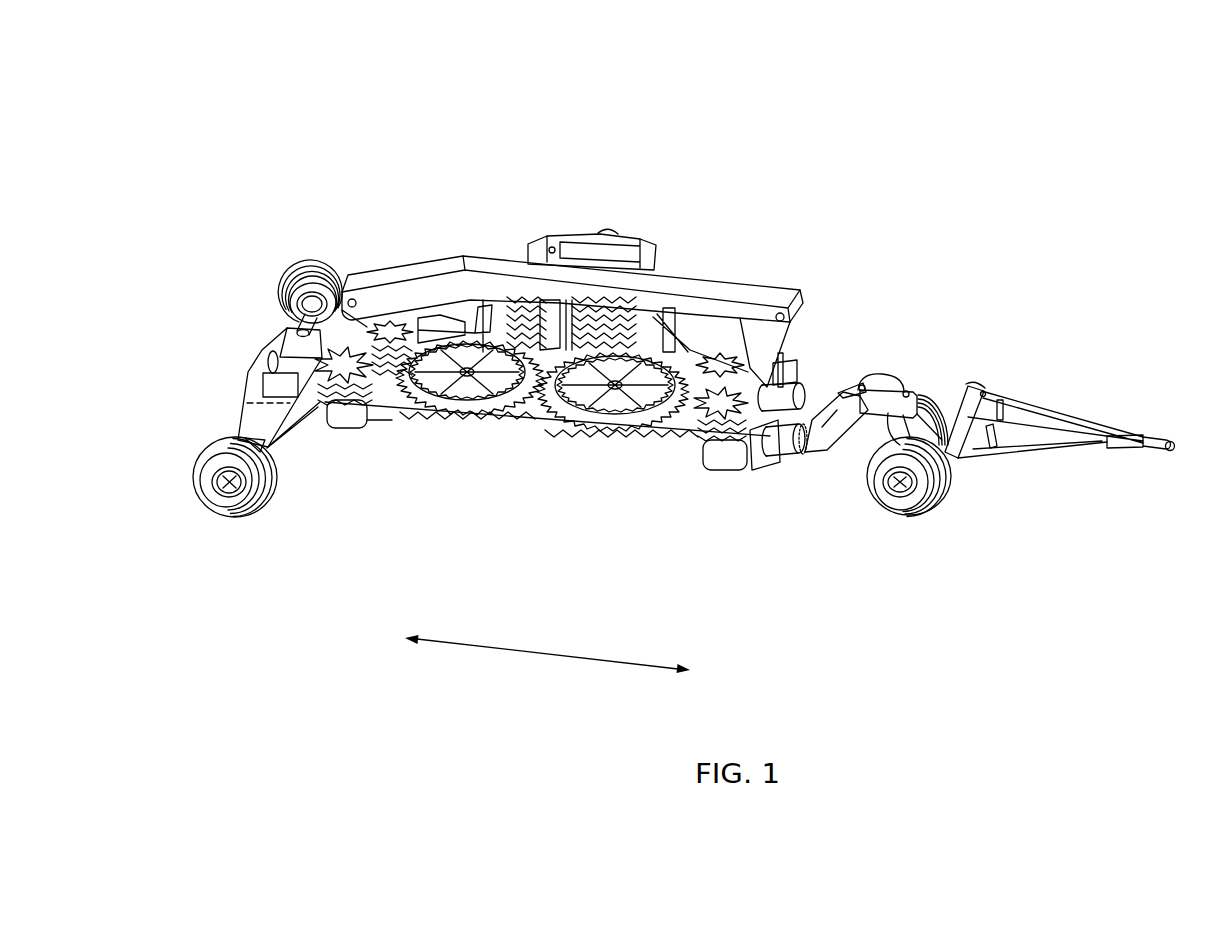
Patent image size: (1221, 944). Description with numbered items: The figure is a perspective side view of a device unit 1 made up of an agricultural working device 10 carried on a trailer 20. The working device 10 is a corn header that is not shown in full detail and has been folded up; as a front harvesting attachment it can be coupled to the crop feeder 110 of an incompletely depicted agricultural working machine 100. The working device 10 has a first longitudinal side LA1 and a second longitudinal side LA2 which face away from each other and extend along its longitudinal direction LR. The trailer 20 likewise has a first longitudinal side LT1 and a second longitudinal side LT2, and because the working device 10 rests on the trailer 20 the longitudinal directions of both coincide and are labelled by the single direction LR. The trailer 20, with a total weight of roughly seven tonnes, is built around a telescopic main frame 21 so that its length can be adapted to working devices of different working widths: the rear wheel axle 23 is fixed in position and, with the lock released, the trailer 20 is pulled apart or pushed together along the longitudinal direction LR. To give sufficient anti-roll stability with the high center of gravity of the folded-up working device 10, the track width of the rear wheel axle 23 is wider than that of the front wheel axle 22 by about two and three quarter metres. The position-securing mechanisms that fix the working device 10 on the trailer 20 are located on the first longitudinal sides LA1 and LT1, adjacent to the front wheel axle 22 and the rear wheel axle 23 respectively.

The device unit 1 is at (941, 149).
The agricultural working machine 100 is at (662, 236).
The crop feeder 110 is at (533, 245).
The agricultural working device 10 is at (548, 430).
The telescopic main frame 21 is at (668, 440).
The rear wheel axle 23 is at (316, 240).
The trailer 20 is at (962, 541).
The front wheel axle 22 is at (943, 377).
The first longitudinal side LA1 is at (406, 247).
The second longitudinal side LA2 is at (422, 470).
The first longitudinal side of the trailer LT1 is at (823, 364).
The second longitudinal side of the trailer LT2 is at (801, 484).
The longitudinal direction LR is at (547, 646).